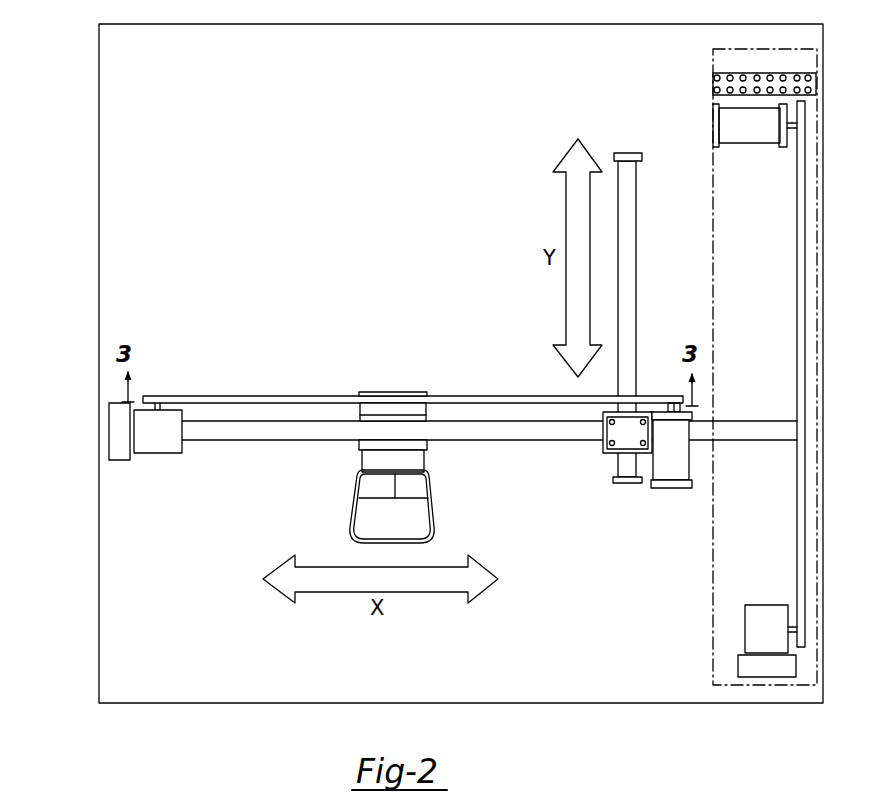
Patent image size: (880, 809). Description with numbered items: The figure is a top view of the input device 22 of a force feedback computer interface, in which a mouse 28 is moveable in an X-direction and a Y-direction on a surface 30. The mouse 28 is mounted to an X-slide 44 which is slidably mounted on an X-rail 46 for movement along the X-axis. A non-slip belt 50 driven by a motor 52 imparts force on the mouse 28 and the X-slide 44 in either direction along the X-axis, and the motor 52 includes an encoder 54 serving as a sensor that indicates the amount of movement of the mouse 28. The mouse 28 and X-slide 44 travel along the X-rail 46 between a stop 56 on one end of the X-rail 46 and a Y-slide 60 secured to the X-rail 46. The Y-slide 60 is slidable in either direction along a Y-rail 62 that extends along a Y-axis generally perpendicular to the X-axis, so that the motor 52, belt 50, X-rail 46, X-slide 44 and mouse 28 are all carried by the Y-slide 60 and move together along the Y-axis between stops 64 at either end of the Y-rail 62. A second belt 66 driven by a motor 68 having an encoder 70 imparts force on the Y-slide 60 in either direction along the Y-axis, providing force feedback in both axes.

The input device 22 is at (82, 143).
The mouse 28 is at (349, 510).
The surface 30 is at (176, 653).
The X-slide 44 is at (391, 387).
The X-rail 46 is at (233, 417).
The non-slip belt 50 is at (295, 392).
The motor 52 is at (694, 459).
The encoder 54 is at (665, 491).
The stop 56 is at (165, 459).
The Y-slide 60 is at (600, 454).
The Y-rail 62 is at (640, 239).
The stops 64 is at (631, 151).
The belt 66 is at (796, 322).
The motor 68 is at (753, 145).
The encoder 70 is at (714, 126).